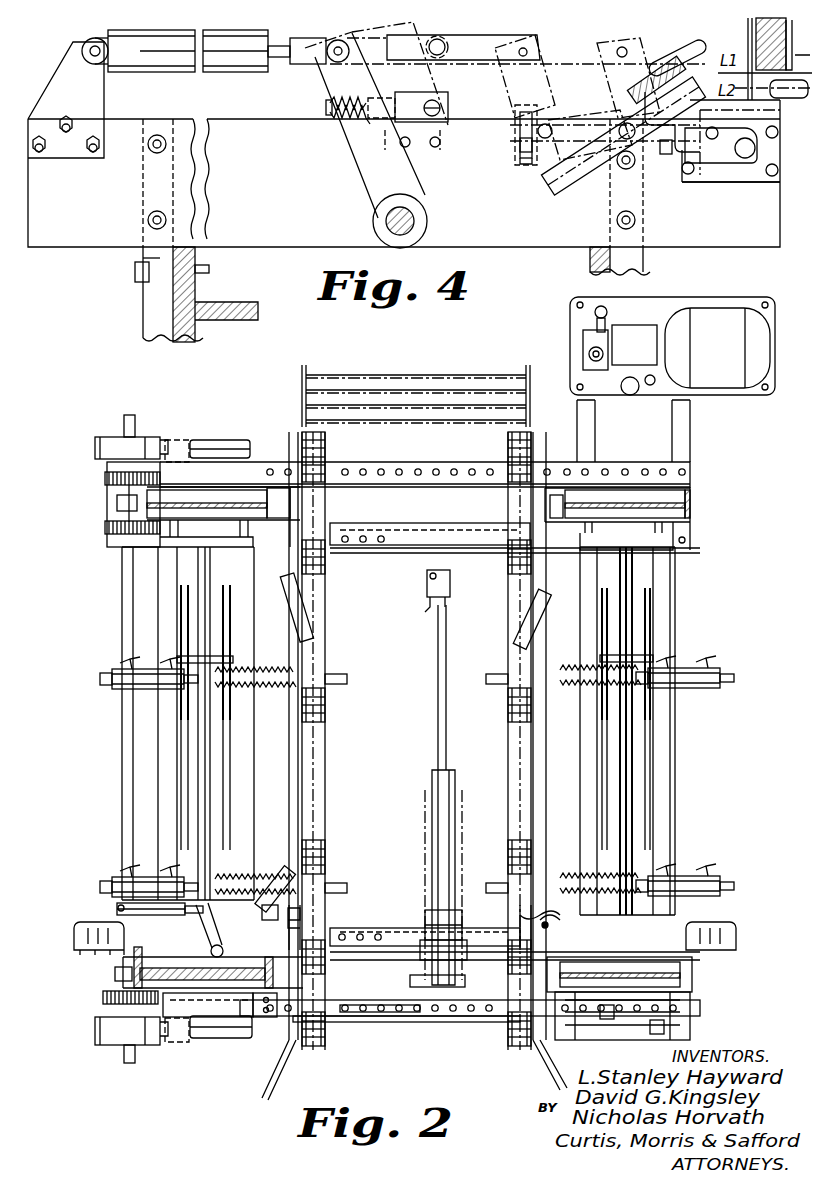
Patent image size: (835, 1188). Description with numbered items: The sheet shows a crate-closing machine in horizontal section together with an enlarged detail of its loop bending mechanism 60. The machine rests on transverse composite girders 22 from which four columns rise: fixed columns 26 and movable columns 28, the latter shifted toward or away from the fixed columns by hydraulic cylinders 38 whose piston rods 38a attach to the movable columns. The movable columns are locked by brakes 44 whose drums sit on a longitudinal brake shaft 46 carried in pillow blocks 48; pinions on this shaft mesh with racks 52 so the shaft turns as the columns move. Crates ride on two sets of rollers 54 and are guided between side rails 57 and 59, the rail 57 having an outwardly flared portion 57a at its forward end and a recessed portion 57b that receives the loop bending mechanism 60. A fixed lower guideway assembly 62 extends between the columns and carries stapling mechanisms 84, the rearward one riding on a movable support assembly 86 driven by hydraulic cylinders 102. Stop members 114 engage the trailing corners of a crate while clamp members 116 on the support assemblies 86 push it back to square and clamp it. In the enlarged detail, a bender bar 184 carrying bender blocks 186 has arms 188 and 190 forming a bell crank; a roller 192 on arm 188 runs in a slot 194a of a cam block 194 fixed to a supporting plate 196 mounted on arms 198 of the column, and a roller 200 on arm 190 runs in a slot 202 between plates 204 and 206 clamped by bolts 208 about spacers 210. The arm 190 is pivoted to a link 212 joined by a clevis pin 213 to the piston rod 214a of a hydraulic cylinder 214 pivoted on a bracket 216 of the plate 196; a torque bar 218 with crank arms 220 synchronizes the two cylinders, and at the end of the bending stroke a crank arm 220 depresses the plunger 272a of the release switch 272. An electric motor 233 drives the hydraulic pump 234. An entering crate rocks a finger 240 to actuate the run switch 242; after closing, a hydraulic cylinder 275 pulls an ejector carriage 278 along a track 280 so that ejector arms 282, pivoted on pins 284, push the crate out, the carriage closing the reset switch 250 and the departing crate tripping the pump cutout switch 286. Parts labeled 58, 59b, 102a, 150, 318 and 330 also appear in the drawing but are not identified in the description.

In FIG. 2, the composite girders 22 is at (107, 520).
In FIG. 2, the fixed columns 26 is at (703, 499).
In FIG. 4, the movable columns 28 is at (230, 302).
In FIG. 2, the movable columns 28 is at (132, 524).
In FIG. 2, the hydraulic cylinders 38 is at (490, 548).
In FIG. 2, the piston rods 38a is at (345, 525).
In FIG. 2, the brakes 44 is at (93, 443).
In FIG. 2, the brake shaft 46 is at (134, 418).
In FIG. 2, the pillow blocks 48 is at (116, 502).
In FIG. 2, the racks 52 is at (104, 478).
In FIG. 2, the rollers 54 is at (330, 712).
In FIG. 2, the side rail 57 is at (540, 437).
In FIG. 2, the outwardly flared portion 57a is at (282, 1074).
In FIG. 2, the recessed portion 57b is at (312, 908).
In FIG. 2, the cylinder 58 is at (210, 440).
In FIG. 2, the side rail 59 is at (290, 435).
In FIG. 2, the guide bar extension 59b is at (546, 1066).
In FIG. 2, the loop bending mechanism 60 is at (300, 924).
In FIG. 2, the fixed lower guideway assembly 62 is at (152, 782).
In FIG. 2, the stapling mechanisms 84 is at (245, 668).
In FIG. 2, the support assembly 86 is at (180, 656).
In FIG. 2, the hydraulic cylinders 102 is at (203, 572).
In FIG. 2, the rack 102a is at (207, 752).
In FIG. 2, the stop members 114 is at (512, 935).
In FIG. 2, the clamp members 116 is at (308, 628).
In FIG. 2, the block 150 is at (416, 779).
In FIG. 4, the bender bar 184 is at (662, 84).
In FIG. 4, the bender blocks 186 is at (697, 40).
In FIG. 4, the arm 188 is at (600, 106).
In FIG. 4, the arm 190 is at (548, 74).
In FIG. 4, the roller 192 is at (678, 112).
In FIG. 4, the cam block 194 is at (718, 183).
In FIG. 4, the slot 194a is at (721, 145).
In FIG. 4, the supporting plate 196 is at (50, 240).
In FIG. 2, the supporting plate 196 is at (158, 943).
In FIG. 4, the arms 198 is at (148, 253).
In FIG. 4, the roller 200 is at (575, 130).
In FIG. 4, the slot 202 is at (583, 147).
In FIG. 4, the plate 204 is at (517, 152).
In FIG. 4, the plate 206 is at (522, 115).
In FIG. 4, the bolts 208 is at (524, 90).
In FIG. 4, the spacers 210 is at (518, 137).
In FIG. 4, the link 212 is at (488, 36).
In FIG. 4, the clevis pin 213 is at (345, 45).
In FIG. 4, the hydraulic cylinder 214 is at (137, 31).
In FIG. 2, the hydraulic cylinder 214 is at (116, 909).
In FIG. 4, the piston rod 214a is at (275, 44).
In FIG. 4, the bracket 216 is at (62, 64).
In FIG. 4, the torque bar 218 is at (416, 225).
In FIG. 4, the crank arms 220 is at (352, 154).
In FIG. 2, the crank arms 220 is at (208, 940).
In FIG. 4, the electric motor 233 is at (722, 310).
In FIG. 4, the hydraulic pump 234 is at (636, 325).
In FIG. 2, the finger 240 is at (518, 916).
In FIG. 2, the run switch 242 is at (560, 914).
In FIG. 2, the reset switch 250 is at (430, 775).
In FIG. 4, the release switch 272 is at (450, 103).
In FIG. 4, the plunger 272a is at (447, 84).
In FIG. 2, the hydraulic cylinder 275 is at (447, 712).
In FIG. 2, the ejector carriage 278 is at (440, 987).
In FIG. 2, the track 280 is at (455, 858).
In FIG. 2, the ejector arms 282 is at (424, 921).
In FIG. 2, the pins 284 is at (462, 965).
In FIG. 2, the pump cutout switch 286 is at (425, 578).
In FIG. 2, the rod 318 is at (428, 1020).
In FIG. 2, the rod 330 is at (356, 1024).